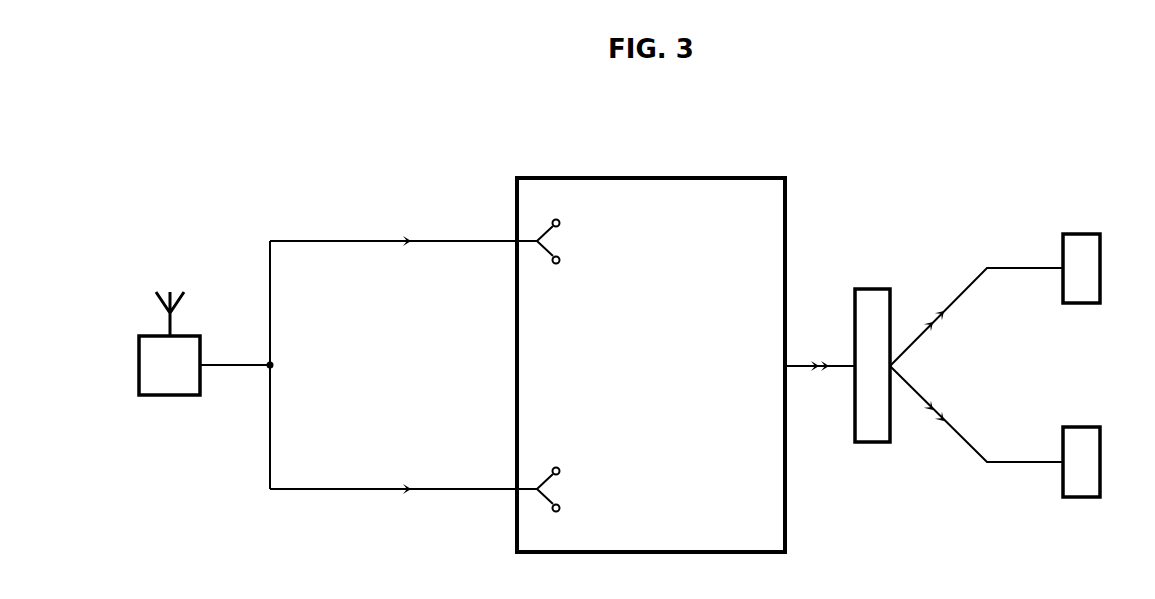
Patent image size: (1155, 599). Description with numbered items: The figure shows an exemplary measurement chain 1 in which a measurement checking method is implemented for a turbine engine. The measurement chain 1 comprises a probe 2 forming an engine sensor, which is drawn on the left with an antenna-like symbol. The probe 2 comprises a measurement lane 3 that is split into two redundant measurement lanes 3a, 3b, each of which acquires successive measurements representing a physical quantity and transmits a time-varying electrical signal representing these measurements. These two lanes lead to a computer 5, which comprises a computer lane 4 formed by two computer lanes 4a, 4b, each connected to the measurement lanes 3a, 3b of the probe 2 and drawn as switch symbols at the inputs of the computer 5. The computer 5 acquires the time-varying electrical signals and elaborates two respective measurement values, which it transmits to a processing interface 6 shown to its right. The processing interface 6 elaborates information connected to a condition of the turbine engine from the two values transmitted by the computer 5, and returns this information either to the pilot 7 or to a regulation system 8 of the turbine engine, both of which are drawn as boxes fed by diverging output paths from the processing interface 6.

The measurement chain 1 is at (334, 99).
The probe 2 is at (162, 378).
The measurement lane 3 is at (468, 188).
The first redundant measurement lane 3a is at (359, 240).
The second redundant measurement lane 3b is at (359, 488).
The computer lane 4 is at (622, 336).
The first computer lane 4a is at (527, 240).
The second computer lane 4b is at (527, 488).
The computer 5 is at (643, 374).
The processing interface 6 is at (864, 377).
The pilot 7 is at (1074, 280).
The regulation system 8 is at (1074, 473).